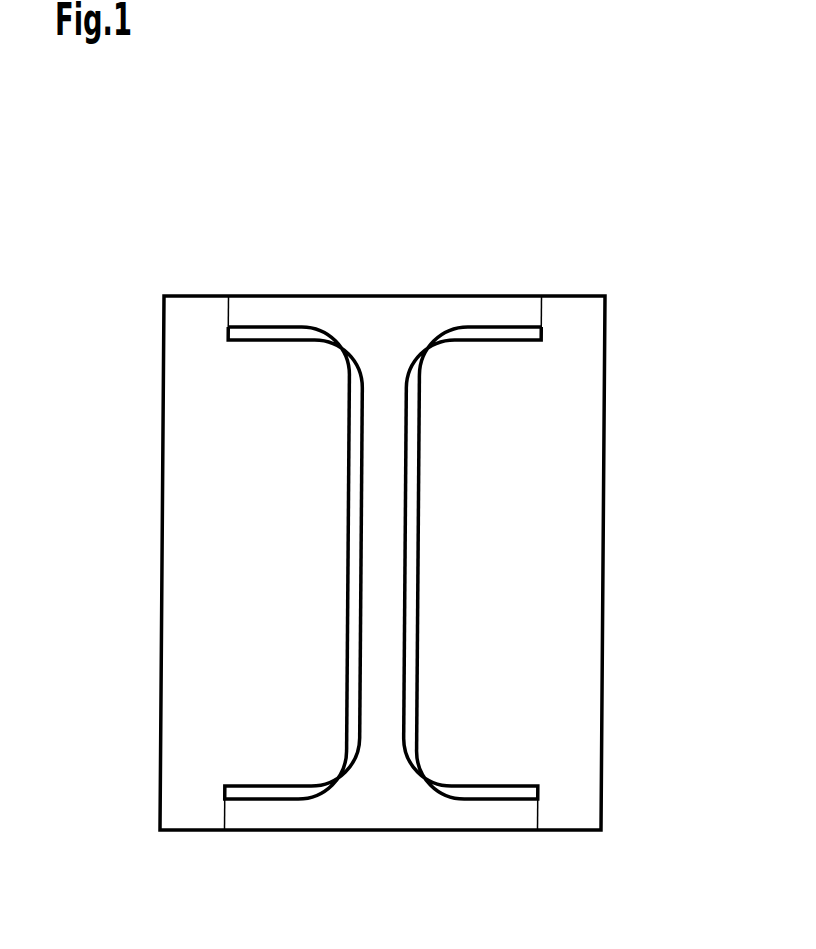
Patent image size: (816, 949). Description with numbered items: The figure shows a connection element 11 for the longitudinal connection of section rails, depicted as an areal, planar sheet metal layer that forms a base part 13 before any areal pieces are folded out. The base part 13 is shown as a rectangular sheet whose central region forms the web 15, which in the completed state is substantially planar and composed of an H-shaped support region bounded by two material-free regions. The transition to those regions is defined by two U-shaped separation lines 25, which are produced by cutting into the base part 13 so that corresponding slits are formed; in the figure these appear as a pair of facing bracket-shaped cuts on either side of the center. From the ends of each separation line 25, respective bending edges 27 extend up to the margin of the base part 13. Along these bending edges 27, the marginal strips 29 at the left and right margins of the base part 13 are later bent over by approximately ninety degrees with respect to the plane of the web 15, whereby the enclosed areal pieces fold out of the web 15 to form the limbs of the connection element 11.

The connection element 11 is at (146, 206).
The base part 13 is at (563, 378).
The web 15 is at (383, 328).
The separation lines 25 is at (332, 493).
The bending edges 27 is at (246, 305).
The marginal strips 29 is at (189, 333).